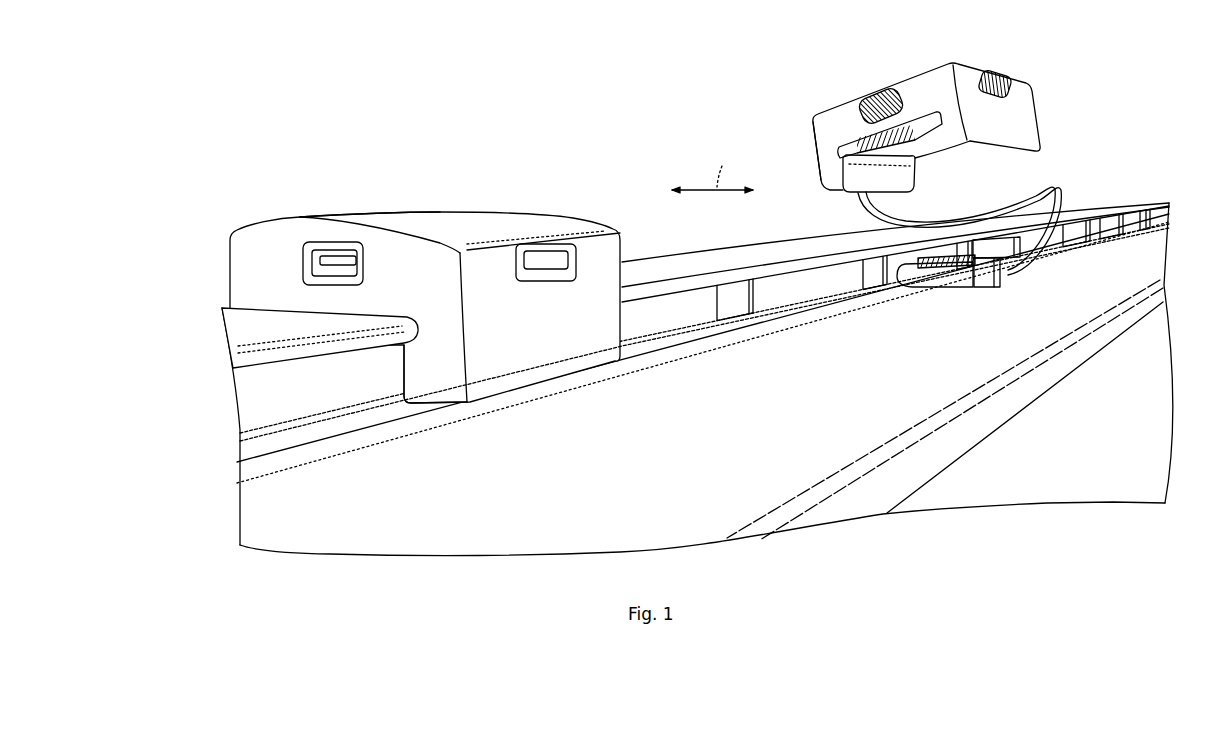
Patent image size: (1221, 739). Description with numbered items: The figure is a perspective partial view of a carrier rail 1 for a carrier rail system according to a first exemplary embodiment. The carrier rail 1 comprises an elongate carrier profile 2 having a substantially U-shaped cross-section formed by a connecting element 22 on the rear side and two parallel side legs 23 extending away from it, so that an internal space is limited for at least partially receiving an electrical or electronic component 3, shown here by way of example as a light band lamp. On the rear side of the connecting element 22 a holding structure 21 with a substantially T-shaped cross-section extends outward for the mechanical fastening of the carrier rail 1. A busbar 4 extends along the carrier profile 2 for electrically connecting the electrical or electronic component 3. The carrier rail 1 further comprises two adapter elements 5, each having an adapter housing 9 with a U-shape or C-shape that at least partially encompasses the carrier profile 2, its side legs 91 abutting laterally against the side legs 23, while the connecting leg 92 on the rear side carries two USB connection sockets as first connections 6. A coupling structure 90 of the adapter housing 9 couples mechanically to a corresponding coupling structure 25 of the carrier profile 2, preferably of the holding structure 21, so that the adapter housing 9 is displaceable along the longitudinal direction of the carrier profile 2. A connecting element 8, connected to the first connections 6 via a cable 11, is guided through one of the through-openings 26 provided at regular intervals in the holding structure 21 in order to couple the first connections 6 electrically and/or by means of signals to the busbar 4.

The carrier rail 1 is at (561, 127).
The carrier profile 2 is at (260, 512).
The electrical or electronic component 3 is at (1040, 388).
The busbar 4 is at (732, 309).
The adapter element 5 is at (632, 242).
The first connection 6 is at (306, 248).
The connecting element 8 is at (960, 287).
The adapter housing 9 is at (578, 212).
The cable 11 is at (1057, 186).
The holding structure 21 is at (778, 248).
The connecting element 22 is at (262, 413).
The side legs 23 is at (333, 524).
The coupling structure 25 is at (834, 276).
The through-opening 26 is at (870, 276).
The coupling structure 90 is at (410, 372).
The side legs 91 is at (243, 270).
The connecting leg 92 is at (497, 214).